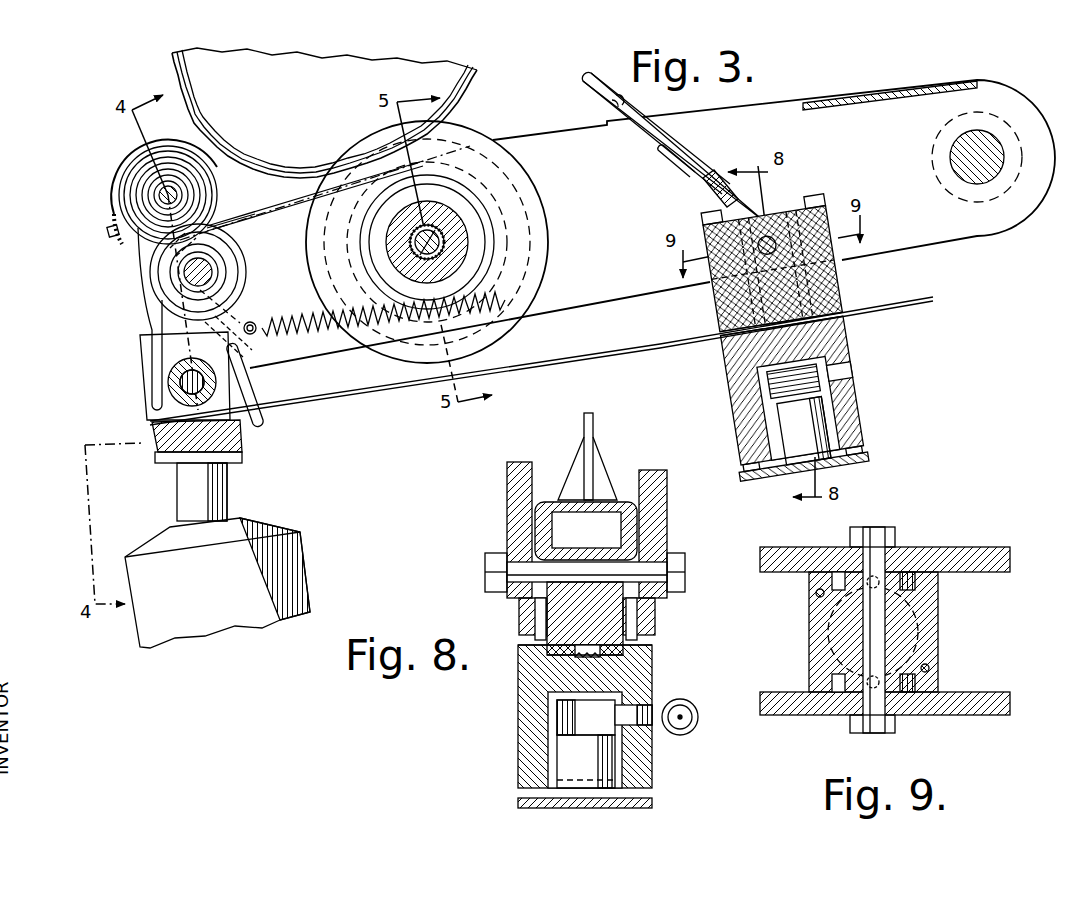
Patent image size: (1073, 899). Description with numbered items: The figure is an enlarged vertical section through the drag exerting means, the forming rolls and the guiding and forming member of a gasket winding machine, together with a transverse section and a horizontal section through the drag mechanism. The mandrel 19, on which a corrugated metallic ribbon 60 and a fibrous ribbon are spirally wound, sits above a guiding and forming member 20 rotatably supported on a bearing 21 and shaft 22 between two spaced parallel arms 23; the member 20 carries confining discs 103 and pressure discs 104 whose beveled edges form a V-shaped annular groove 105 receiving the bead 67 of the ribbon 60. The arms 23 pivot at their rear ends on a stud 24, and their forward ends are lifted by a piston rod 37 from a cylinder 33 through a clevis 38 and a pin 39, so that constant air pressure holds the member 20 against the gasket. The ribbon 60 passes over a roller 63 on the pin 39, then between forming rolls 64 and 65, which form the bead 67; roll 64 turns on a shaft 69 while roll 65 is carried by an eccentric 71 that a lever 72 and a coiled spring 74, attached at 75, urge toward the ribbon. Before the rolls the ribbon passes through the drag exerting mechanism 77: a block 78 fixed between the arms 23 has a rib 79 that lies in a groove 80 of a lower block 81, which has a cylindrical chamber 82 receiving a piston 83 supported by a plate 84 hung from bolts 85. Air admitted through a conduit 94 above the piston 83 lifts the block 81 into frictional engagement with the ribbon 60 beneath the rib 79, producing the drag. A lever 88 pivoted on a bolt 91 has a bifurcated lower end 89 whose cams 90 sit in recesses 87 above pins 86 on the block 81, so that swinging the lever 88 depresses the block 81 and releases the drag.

In FIG. 3, the mandrel 19 is at (324, 113).
In FIG. 3, the guiding and forming member 20 is at (549, 238).
In FIG. 3, the bearing 21 is at (445, 262).
In FIG. 3, the shaft 22 is at (425, 248).
In FIG. 3, the arms 23 is at (622, 283).
In FIG. 8, the arms 23 is at (507, 489).
In FIG. 9, the arms 23 is at (885, 631).
In FIG. 3, the stud 24 is at (983, 165).
In FIG. 3, the cylinder 33 is at (305, 572).
In FIG. 3, the piston rod 37 is at (226, 488).
In FIG. 3, the clevis 38 is at (145, 355).
In FIG. 3, the pin 39 is at (180, 396).
In FIG. 3, the metallic ribbon 60 is at (526, 365).
In FIG. 8, the metallic ribbon 60 is at (575, 660).
In FIG. 3, the roller 63 is at (172, 382).
In FIG. 3, the forming roll 64 is at (128, 165).
In FIG. 3, the forming roll 65 is at (160, 247).
In FIG. 3, the bead or corrugation 67 is at (257, 217).
In FIG. 3, the shaft 69 is at (160, 195).
In FIG. 3, the eccentric 71 is at (190, 275).
In FIG. 3, the lever 72 is at (265, 392).
In FIG. 3, the coiled spring 74 is at (282, 320).
In FIG. 3, the spring attachment point 75 is at (268, 297).
In FIG. 3, the drag exerting mechanism 77 is at (870, 354).
In FIG. 8, the drag exerting mechanism 77 is at (655, 771).
In FIG. 9, the drag exerting mechanism 77 is at (945, 632).
In FIG. 3, the block 78 is at (815, 286).
In FIG. 8, the block 78 is at (640, 618).
In FIG. 3, the rib 79 is at (848, 313).
In FIG. 8, the rib 79 is at (620, 649).
In FIG. 8, the groove 80 is at (580, 652).
In FIG. 3, the block 81 is at (732, 397).
In FIG. 8, the block 81 is at (525, 730).
In FIG. 3, the cylindrical chamber 82 is at (830, 368).
In FIG. 8, the cylindrical chamber 82 is at (598, 712).
In FIG. 3, the piston 83 is at (850, 420).
In FIG. 8, the piston 83 is at (565, 762).
In FIG. 3, the plate 84 is at (870, 460).
In FIG. 8, the plate 84 is at (652, 803).
In FIG. 9, the bolts 85 is at (815, 593).
In FIG. 8, the pins 86 is at (540, 620).
In FIG. 3, the recesses 87 is at (713, 305).
In FIG. 8, the recesses 87 is at (520, 605).
In FIG. 9, the recesses 87 is at (838, 575).
In FIG. 3, the lever 88 is at (672, 152).
In FIG. 8, the lever 88 is at (590, 445).
In FIG. 8, the bifurcated lower end 89 is at (630, 520).
In FIG. 3, the cams 90 is at (862, 250).
In FIG. 9, the cams 90 is at (910, 575).
In FIG. 3, the bolt 91 is at (781, 227).
In FIG. 8, the bolt 91 is at (655, 572).
In FIG. 9, the bolt 91 is at (872, 710).
In FIG. 8, the conduit 94 is at (692, 725).
In FIG. 3, the confining discs 103 is at (503, 176).
In FIG. 3, the pressure discs 104 is at (478, 222).
In FIG. 3, the V-shaped annular groove 105 is at (500, 252).